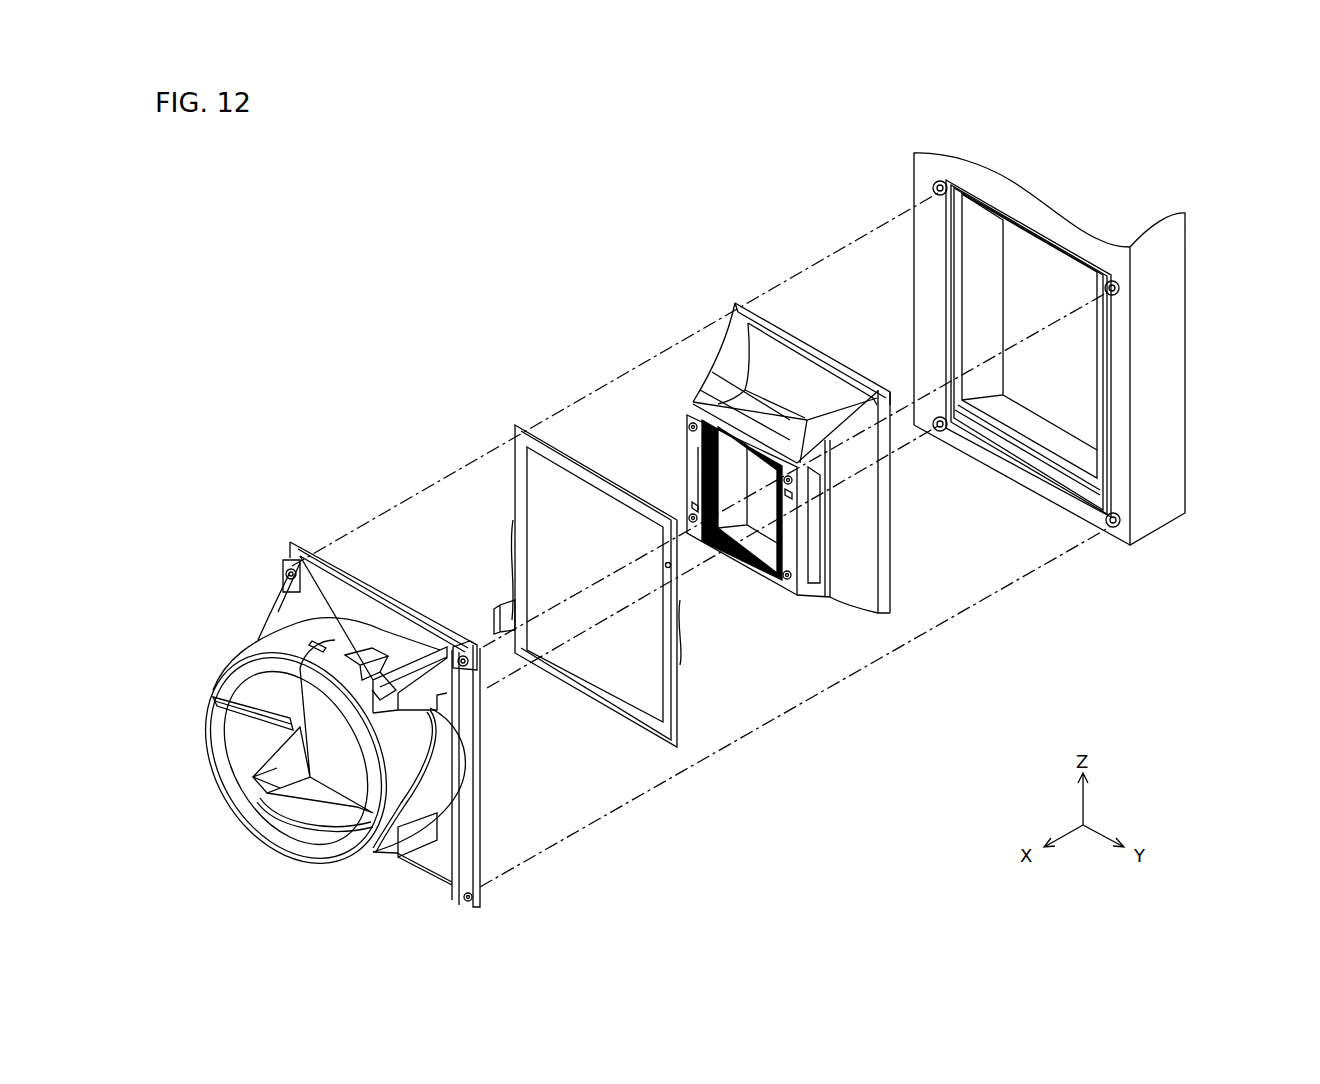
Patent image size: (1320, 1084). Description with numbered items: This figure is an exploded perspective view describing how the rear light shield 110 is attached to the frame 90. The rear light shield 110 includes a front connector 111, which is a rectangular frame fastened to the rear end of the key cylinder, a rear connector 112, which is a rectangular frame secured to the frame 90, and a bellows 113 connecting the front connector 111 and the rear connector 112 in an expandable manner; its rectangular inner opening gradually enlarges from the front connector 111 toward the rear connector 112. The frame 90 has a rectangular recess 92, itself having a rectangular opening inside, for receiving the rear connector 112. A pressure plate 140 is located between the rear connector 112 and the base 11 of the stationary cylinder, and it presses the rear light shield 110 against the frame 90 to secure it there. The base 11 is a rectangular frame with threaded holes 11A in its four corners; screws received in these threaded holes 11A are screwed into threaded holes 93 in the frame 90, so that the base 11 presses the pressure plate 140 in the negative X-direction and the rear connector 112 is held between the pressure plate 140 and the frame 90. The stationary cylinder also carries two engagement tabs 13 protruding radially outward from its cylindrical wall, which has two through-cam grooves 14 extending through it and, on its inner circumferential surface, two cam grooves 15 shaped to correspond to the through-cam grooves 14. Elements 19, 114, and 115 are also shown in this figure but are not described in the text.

The base 11 is at (404, 602).
The threaded holes 11A is at (287, 570).
The engagement tabs 13 is at (318, 642).
The through-cam grooves 14 is at (250, 706).
The cam grooves 15 is at (307, 842).
The fan housing body 19 is at (330, 598).
The pressure plate 140 is at (580, 722).
The rear light shield 110 is at (821, 618).
The front connector 111 is at (752, 566).
The rear connector 112 is at (805, 343).
The bellows 113 is at (865, 538).
The screw 114 is at (688, 428).
The boss 115 is at (694, 500).
The frame 90 is at (1172, 372).
The recess 92 is at (1018, 450).
The threaded holes 93 is at (930, 191).